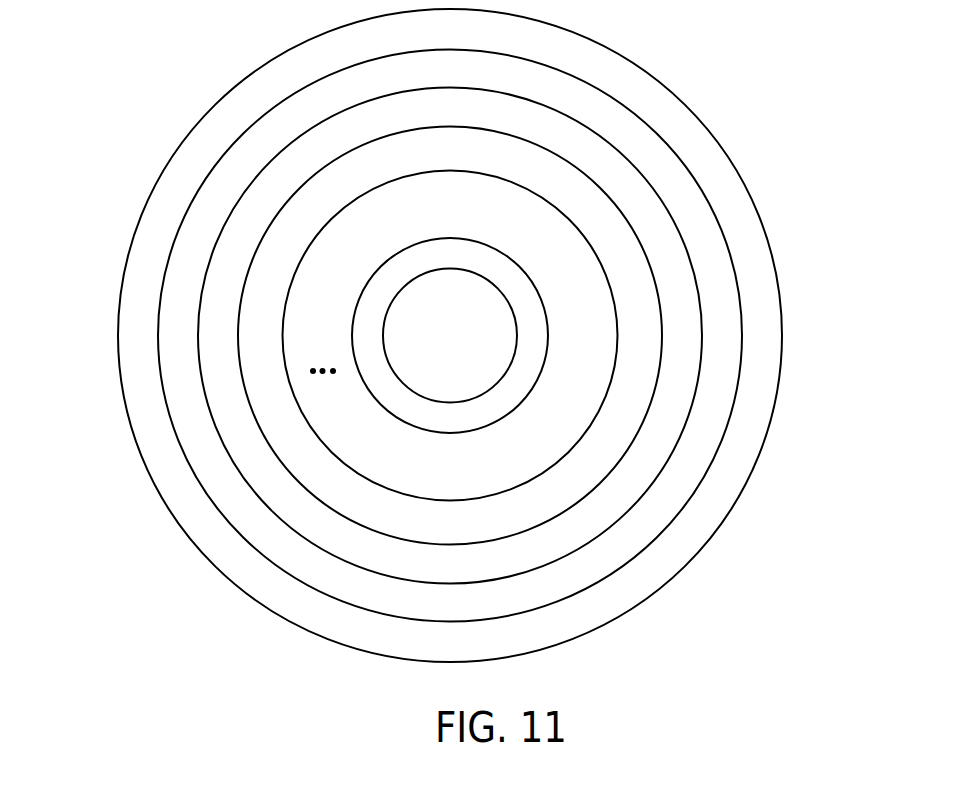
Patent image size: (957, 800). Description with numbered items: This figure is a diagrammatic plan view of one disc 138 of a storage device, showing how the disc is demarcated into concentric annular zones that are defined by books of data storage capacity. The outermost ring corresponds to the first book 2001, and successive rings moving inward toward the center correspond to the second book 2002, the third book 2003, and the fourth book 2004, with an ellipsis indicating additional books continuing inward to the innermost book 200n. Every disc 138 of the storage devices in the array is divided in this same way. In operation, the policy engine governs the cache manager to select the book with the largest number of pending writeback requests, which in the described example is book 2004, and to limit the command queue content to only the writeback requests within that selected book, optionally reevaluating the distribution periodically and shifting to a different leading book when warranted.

The disc 138 is at (700, 117).
The book 2001 is at (147, 403).
The book 2002 is at (198, 437).
The book 2003 is at (246, 452).
The book 2004 is at (324, 477).
The book 200n is at (403, 402).